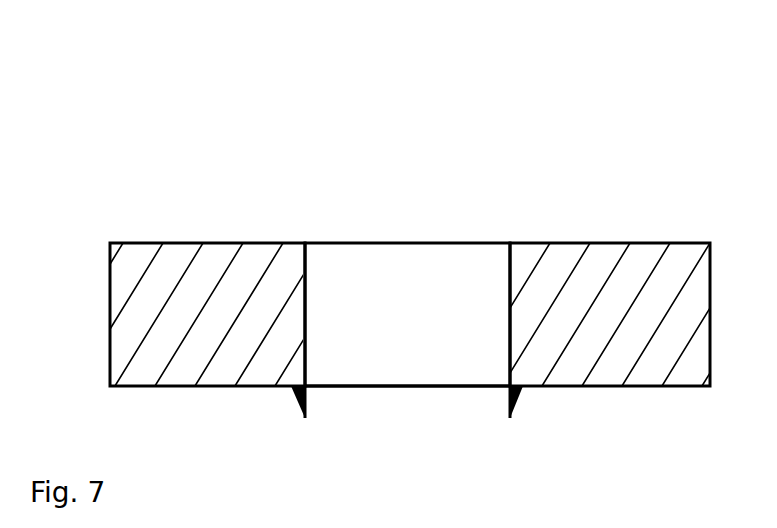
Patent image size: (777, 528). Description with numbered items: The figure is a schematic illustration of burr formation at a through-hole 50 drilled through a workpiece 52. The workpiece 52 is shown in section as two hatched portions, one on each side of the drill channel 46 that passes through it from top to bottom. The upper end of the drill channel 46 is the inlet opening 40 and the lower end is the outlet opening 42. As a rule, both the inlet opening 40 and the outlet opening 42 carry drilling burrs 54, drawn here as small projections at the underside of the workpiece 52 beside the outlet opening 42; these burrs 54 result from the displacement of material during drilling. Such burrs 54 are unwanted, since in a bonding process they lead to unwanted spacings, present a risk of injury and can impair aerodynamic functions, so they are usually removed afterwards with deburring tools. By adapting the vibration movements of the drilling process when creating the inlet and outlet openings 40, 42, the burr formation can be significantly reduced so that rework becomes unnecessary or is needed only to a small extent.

The through-hole 50 is at (573, 138).
The inlet opening 40 is at (440, 242).
The workpiece 52 is at (187, 241).
The drill channel 46 is at (407, 282).
The outlet opening 42 is at (398, 380).
The drilling burrs 54 is at (518, 402).